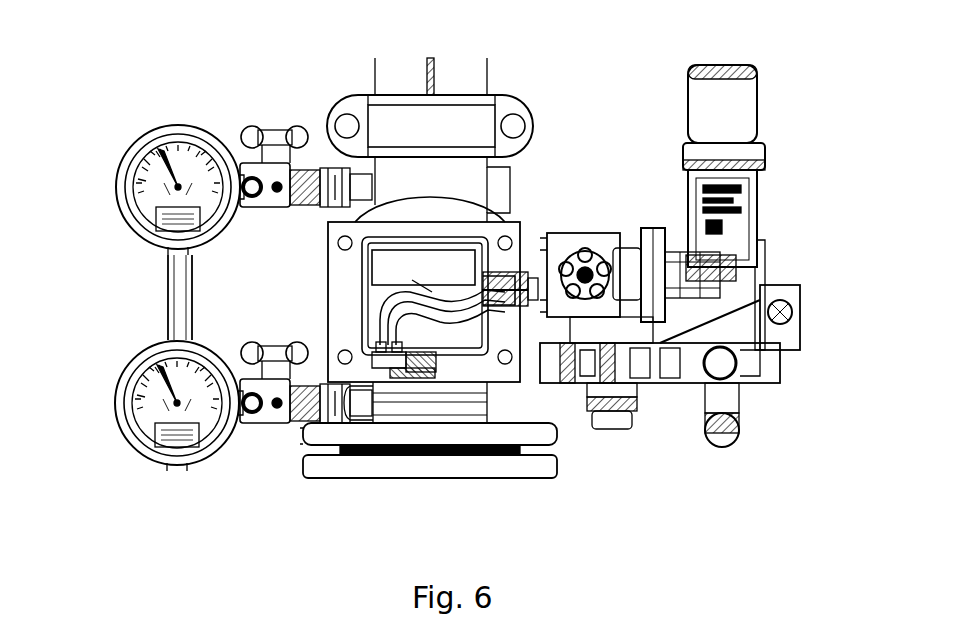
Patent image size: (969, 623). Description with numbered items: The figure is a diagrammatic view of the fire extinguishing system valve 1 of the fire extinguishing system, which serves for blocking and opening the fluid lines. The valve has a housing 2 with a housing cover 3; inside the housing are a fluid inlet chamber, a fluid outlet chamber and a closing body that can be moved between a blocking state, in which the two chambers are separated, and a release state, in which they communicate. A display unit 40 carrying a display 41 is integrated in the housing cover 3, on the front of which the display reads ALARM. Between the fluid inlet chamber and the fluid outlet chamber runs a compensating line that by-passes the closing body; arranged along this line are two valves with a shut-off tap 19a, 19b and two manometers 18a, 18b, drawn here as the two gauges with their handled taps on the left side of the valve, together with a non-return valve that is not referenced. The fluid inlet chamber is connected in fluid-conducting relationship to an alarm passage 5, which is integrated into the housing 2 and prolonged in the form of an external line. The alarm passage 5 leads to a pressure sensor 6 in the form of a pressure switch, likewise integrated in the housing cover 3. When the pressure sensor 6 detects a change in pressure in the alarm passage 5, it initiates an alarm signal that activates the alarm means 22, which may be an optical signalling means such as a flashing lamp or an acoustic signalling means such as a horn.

The fire extinguishing system valve 1 is at (523, 86).
The housing 2 is at (420, 408).
The housing cover 3 is at (343, 322).
The alarm passage 5 is at (664, 366).
The pressure sensor 6 is at (780, 230).
The manometer 18a is at (128, 440).
The manometer 18b is at (164, 142).
The valve with shut-off tap 19a is at (278, 424).
The valve with shut-off tap 19b is at (270, 212).
The alarm means 22 is at (746, 118).
The display unit 40 is at (460, 252).
The display 41 is at (417, 275).